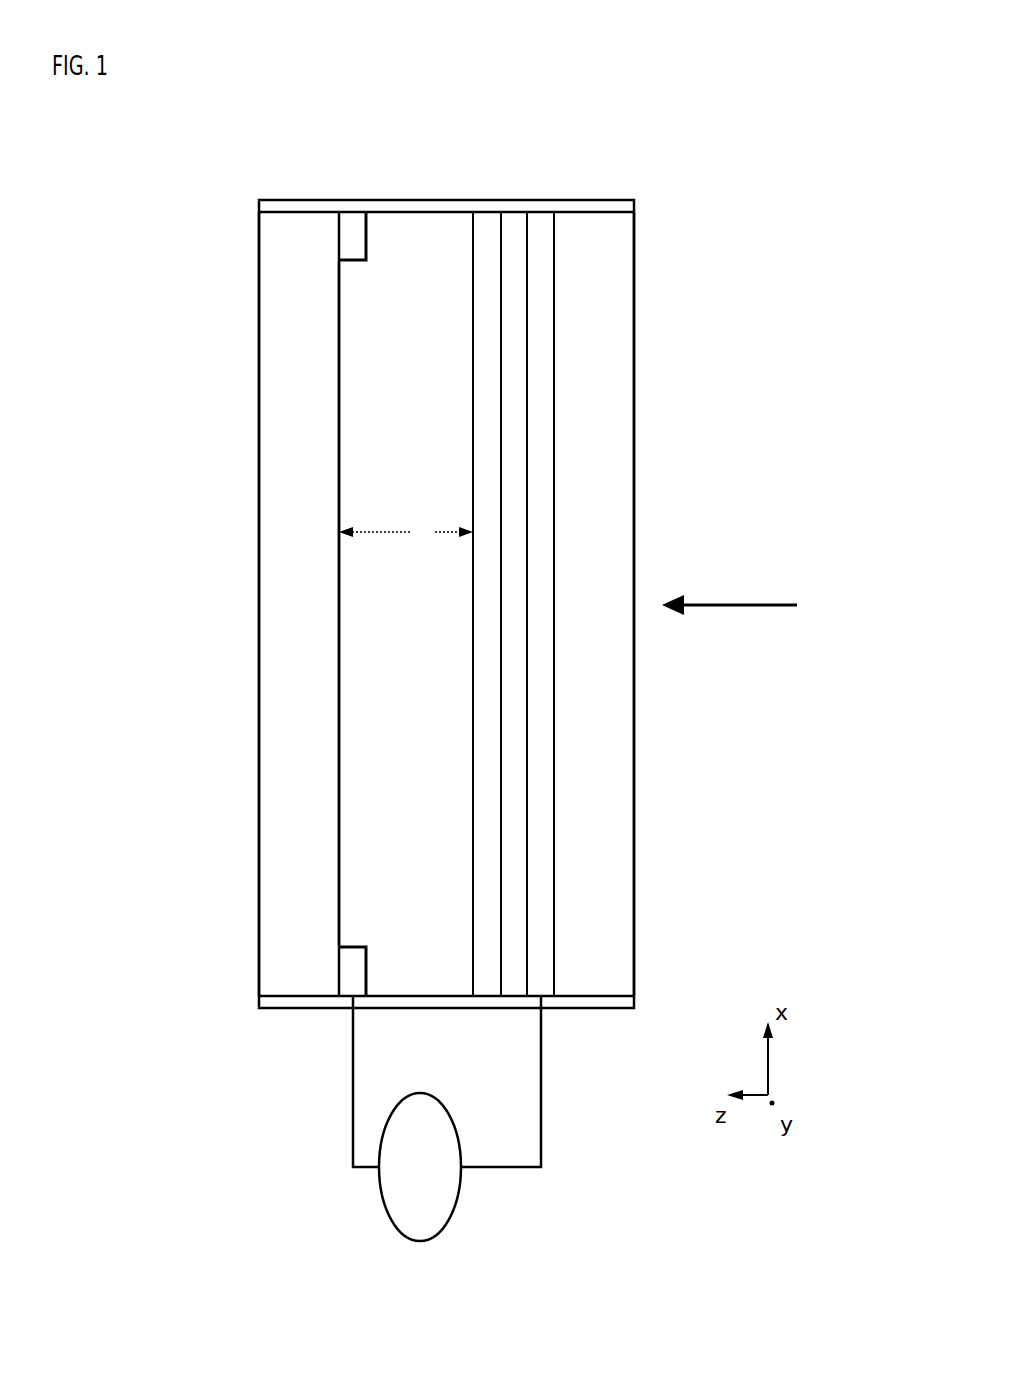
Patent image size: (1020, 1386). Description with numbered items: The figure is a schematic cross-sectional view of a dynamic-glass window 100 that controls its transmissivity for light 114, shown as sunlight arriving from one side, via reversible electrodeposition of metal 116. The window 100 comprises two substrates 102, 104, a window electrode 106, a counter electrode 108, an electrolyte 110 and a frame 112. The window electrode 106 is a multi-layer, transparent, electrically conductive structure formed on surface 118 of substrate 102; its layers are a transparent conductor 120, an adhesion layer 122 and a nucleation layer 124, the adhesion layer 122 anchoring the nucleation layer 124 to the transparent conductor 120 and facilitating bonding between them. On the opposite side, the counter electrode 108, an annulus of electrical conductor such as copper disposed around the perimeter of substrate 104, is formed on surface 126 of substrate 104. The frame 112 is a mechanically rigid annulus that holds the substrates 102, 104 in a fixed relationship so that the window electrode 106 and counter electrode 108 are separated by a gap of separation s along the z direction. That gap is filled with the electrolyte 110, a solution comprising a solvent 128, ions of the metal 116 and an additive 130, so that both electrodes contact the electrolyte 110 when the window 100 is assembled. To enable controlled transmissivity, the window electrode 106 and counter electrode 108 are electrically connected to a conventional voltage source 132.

The window 100 is at (113, 168).
The substrate 102 is at (607, 873).
The substrate 104 is at (285, 872).
The window electrode 106 is at (553, 200).
The counter electrode 108 is at (352, 235).
The electrolyte 110 is at (407, 247).
The frame 112 is at (273, 1008).
The light 114 is at (728, 606).
The metal 116 is at (372, 680).
The surface 118 is at (557, 568).
The transparent conductor 120 is at (540, 457).
The adhesion layer 122 is at (513, 408).
The nucleation layer 124 is at (487, 360).
The surface 126 is at (336, 284).
The solvent 128 is at (364, 383).
The additive 130 is at (364, 482).
The voltage source 132 is at (457, 1192).